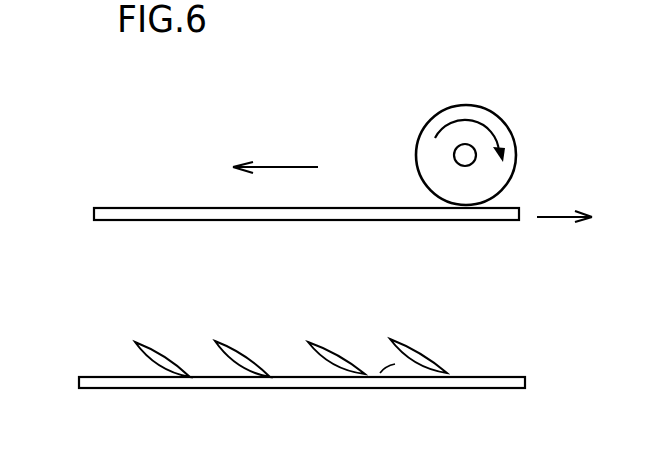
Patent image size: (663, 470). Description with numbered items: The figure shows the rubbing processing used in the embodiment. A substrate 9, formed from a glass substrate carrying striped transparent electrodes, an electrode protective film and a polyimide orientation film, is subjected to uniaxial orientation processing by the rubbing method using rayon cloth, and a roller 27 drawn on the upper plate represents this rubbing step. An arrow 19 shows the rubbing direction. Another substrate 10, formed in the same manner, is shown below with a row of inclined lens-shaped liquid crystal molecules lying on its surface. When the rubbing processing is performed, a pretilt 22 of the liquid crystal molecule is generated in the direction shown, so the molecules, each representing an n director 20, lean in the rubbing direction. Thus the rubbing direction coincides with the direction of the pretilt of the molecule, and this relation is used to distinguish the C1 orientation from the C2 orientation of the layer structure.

The substrate 9 is at (94, 212).
The another substrate 10 is at (79, 380).
The arrow 19 is at (293, 166).
The n director 20 is at (410, 352).
The pretilt 22 is at (380, 373).
The roller 27 is at (430, 118).